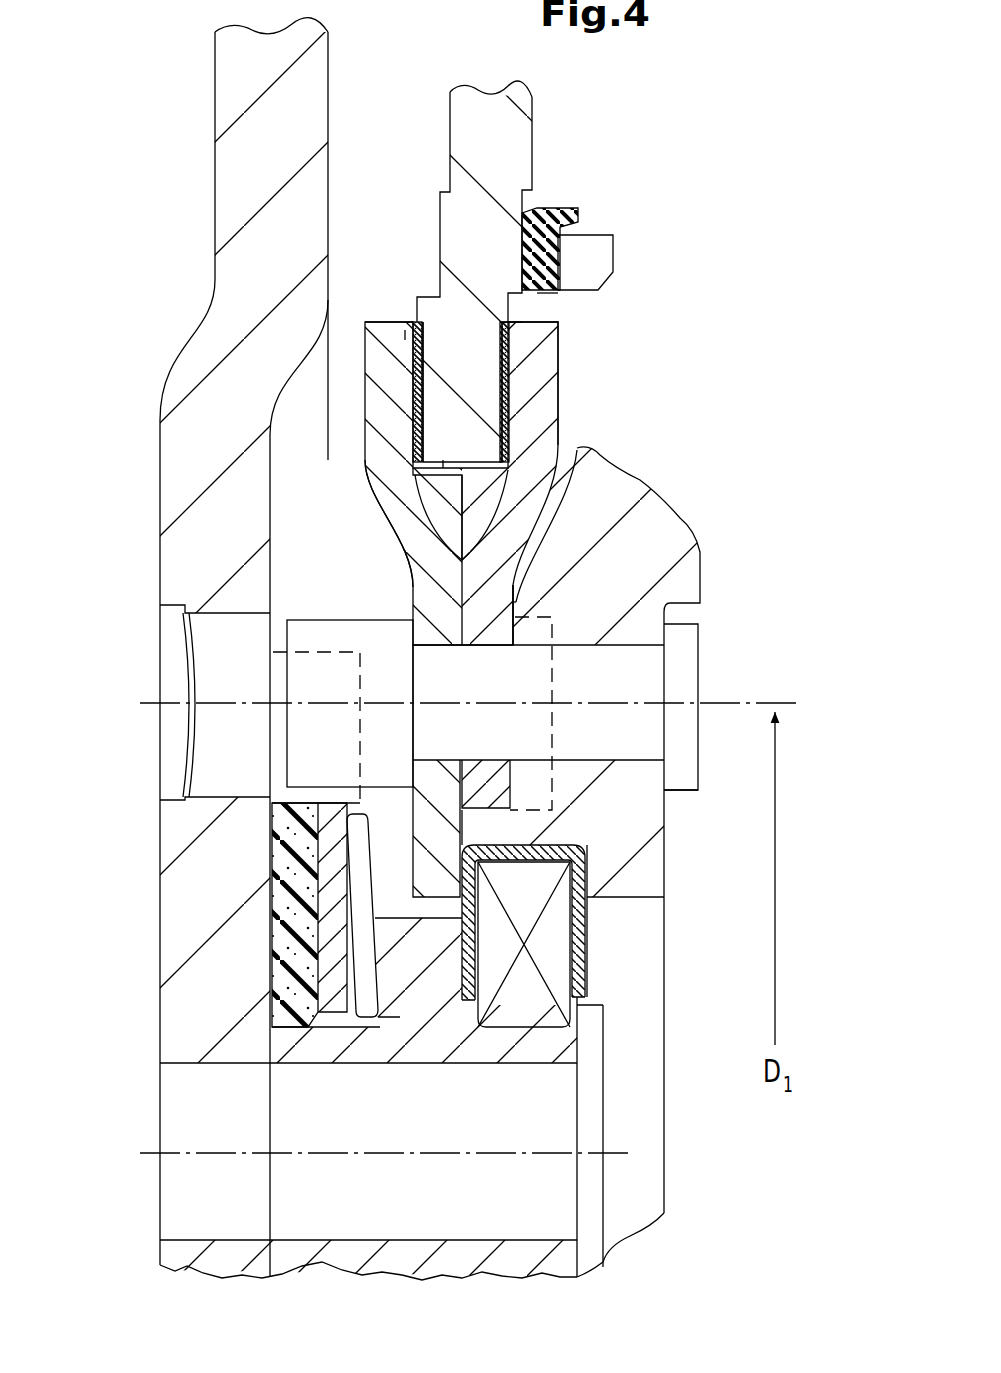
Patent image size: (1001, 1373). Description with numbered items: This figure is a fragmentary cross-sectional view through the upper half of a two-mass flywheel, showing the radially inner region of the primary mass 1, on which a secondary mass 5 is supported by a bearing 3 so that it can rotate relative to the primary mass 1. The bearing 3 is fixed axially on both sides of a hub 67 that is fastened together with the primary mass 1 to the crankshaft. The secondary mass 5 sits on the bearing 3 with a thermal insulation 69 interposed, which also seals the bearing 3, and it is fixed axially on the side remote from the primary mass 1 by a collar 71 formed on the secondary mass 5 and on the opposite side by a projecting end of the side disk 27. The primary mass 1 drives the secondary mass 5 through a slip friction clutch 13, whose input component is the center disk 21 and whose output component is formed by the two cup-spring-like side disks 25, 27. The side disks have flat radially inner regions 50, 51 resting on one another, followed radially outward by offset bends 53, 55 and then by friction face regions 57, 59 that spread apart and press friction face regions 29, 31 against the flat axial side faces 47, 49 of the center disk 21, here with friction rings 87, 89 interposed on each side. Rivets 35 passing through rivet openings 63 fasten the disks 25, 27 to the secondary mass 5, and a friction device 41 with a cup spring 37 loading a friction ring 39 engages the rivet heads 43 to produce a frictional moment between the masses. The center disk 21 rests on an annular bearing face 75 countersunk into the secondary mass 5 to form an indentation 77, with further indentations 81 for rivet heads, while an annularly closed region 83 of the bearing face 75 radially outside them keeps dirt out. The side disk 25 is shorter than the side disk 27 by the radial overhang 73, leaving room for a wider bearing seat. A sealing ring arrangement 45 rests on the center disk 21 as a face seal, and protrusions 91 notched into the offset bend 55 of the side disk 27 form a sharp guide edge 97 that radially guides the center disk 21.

The primary mass 1 is at (200, 358).
The bearing 3 is at (560, 977).
The secondary mass 5 is at (685, 587).
The slip friction clutch 13 is at (350, 435).
The center disk 21 is at (515, 163).
The side disk 25 is at (566, 335).
The side disk 27 is at (368, 500).
The friction face region 29 is at (514, 405).
The friction face region 31 is at (272, 316).
The rivets 35 is at (677, 678).
The cup spring 37 is at (363, 898).
The friction ring 39 is at (355, 935).
The friction device 41 is at (268, 968).
The rivet heads 43 is at (300, 747).
The sealing ring arrangement 45 is at (621, 239).
The axial side face 47 is at (455, 330).
The axial side face 49 is at (483, 327).
The radially inner region 50 is at (640, 780).
The radially inner region 51 is at (430, 861).
The offset bend 53 is at (515, 530).
The offset bend 55 is at (420, 540).
The friction face region 57 is at (540, 443).
The friction face region 59 is at (393, 383).
The rivet openings 63 is at (445, 758).
The hub 67 is at (400, 1260).
The thermal insulation 69 is at (590, 873).
The collar 71 is at (620, 887).
The radial overhang 73 is at (445, 887).
The annular bearing face 75 is at (513, 602).
The indentation 77 is at (482, 808).
The indentations 81 is at (553, 737).
The annularly closed region 83 is at (524, 602).
The friction ring 87 is at (512, 310).
The friction ring 89 is at (417, 321).
The protrusions 91 is at (448, 503).
The guide edge 97 is at (443, 468).